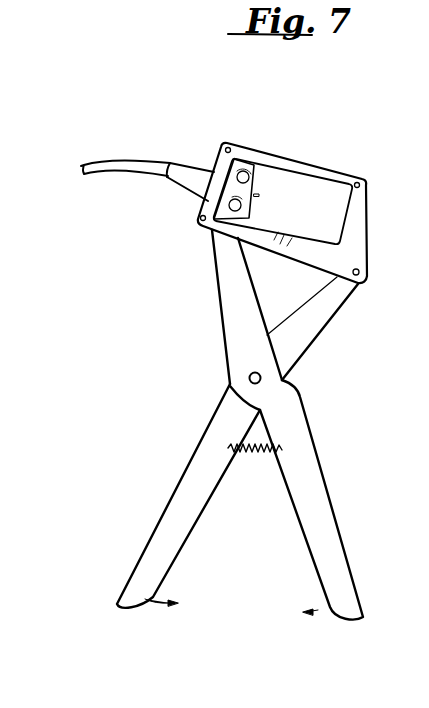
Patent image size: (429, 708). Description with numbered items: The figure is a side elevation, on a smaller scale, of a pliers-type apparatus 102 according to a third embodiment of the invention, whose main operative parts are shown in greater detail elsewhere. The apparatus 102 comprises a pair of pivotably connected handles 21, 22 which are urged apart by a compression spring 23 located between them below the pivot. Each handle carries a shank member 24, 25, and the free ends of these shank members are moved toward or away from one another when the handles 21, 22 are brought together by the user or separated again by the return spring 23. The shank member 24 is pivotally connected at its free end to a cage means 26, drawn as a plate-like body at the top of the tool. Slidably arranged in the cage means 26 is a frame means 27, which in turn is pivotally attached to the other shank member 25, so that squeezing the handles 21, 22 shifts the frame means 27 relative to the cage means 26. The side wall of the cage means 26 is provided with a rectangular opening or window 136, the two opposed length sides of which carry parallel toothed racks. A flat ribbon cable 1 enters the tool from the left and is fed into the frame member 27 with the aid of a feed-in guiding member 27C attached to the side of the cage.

The pliers-type apparatus 102 is at (218, 112).
The flat ribbon cable 1 is at (111, 159).
The feed-in guiding member 27C is at (188, 190).
The frame means 27 is at (267, 182).
The rectangular opening or window 136 is at (305, 196).
The cage means 26 is at (372, 183).
The shank member 25 is at (233, 316).
The shank member 24 is at (337, 308).
The compression spring 23 is at (248, 462).
The handle 21 is at (174, 548).
The handle 22 is at (320, 569).